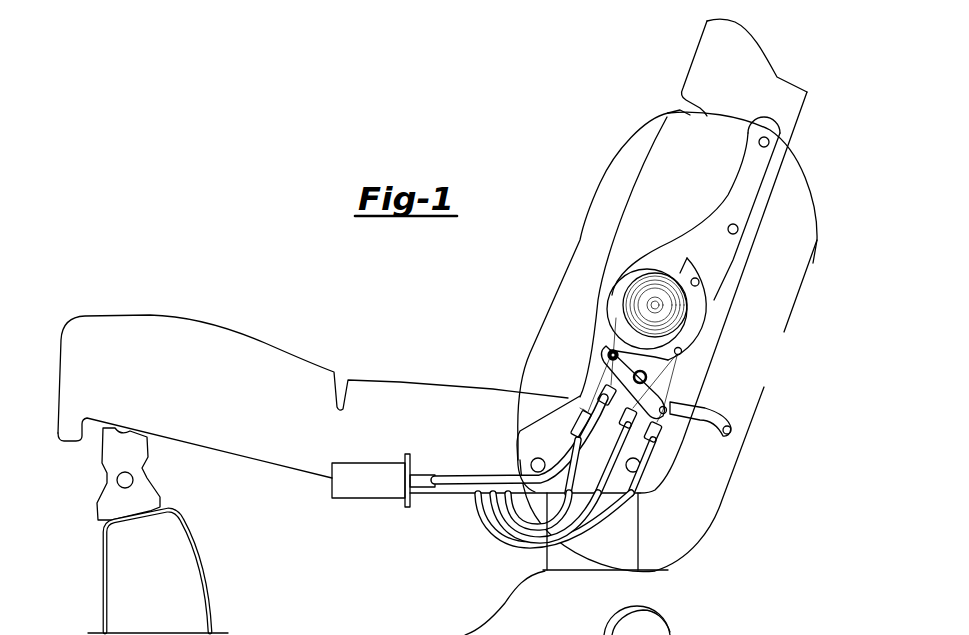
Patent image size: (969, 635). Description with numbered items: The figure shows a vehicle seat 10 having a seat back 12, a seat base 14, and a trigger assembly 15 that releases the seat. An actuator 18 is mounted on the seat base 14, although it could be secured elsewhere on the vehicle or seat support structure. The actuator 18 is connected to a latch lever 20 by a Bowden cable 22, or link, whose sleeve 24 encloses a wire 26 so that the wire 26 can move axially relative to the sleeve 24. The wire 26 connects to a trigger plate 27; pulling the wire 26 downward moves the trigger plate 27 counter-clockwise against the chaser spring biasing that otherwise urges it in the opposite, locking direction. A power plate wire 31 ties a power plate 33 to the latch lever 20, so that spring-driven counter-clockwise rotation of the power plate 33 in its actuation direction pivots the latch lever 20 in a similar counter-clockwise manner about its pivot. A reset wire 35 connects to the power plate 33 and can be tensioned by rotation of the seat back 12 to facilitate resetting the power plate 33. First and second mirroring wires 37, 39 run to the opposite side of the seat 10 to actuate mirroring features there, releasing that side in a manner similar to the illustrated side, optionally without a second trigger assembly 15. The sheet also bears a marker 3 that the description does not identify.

The vehicle seat 10 is at (405, 325).
The seat back 12 is at (700, 63).
The seat base 14 is at (114, 332).
The trigger assembly 15 is at (655, 215).
The actuator 18 is at (357, 490).
The latch lever 20 is at (676, 418).
The Bowden cable 22 is at (463, 472).
The sleeve 24 is at (553, 452).
The wire 26 is at (578, 402).
The trigger plate 27 is at (627, 288).
The power plate wire 31 is at (672, 384).
The power plate 33 is at (708, 311).
The reset wire 35 is at (593, 500).
The first mirroring wire 37 is at (585, 413).
The second mirroring wire 39 is at (640, 465).
The view indicator 3 is at (774, 358).